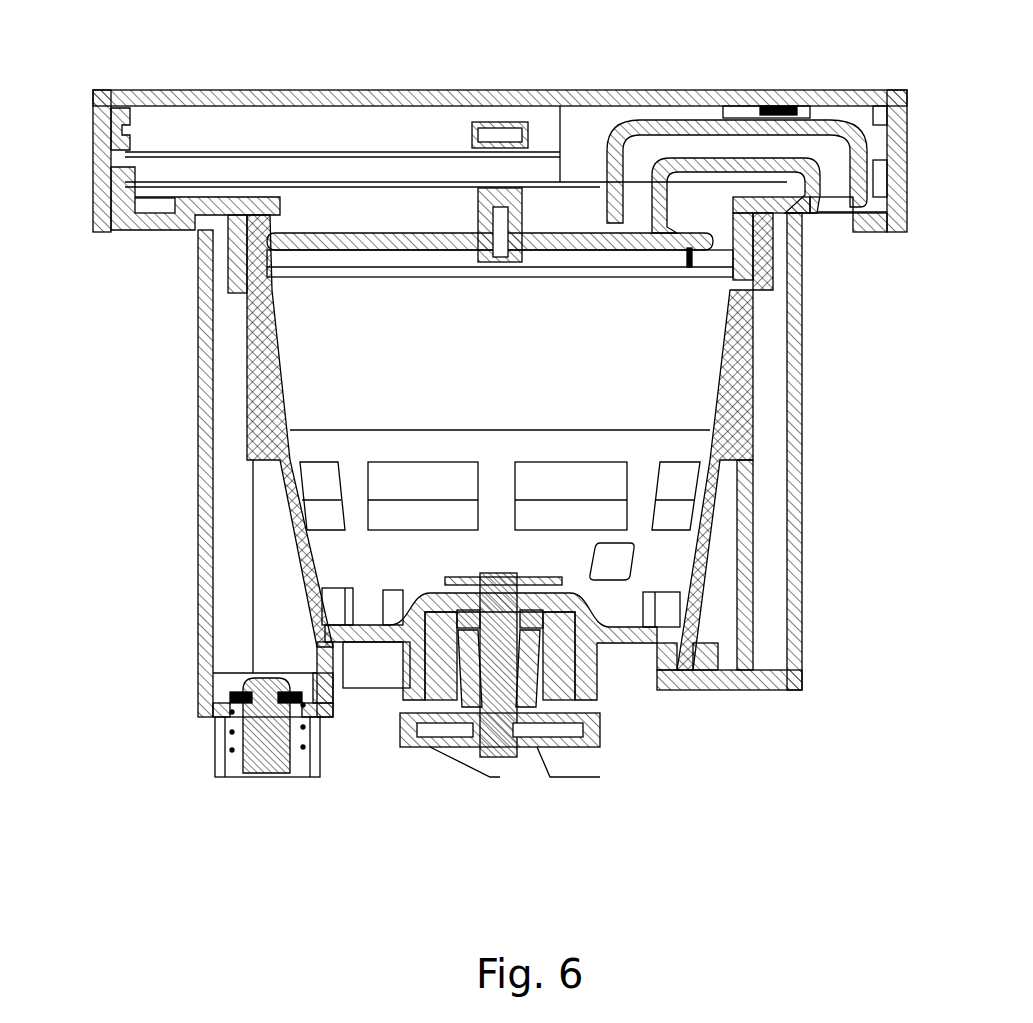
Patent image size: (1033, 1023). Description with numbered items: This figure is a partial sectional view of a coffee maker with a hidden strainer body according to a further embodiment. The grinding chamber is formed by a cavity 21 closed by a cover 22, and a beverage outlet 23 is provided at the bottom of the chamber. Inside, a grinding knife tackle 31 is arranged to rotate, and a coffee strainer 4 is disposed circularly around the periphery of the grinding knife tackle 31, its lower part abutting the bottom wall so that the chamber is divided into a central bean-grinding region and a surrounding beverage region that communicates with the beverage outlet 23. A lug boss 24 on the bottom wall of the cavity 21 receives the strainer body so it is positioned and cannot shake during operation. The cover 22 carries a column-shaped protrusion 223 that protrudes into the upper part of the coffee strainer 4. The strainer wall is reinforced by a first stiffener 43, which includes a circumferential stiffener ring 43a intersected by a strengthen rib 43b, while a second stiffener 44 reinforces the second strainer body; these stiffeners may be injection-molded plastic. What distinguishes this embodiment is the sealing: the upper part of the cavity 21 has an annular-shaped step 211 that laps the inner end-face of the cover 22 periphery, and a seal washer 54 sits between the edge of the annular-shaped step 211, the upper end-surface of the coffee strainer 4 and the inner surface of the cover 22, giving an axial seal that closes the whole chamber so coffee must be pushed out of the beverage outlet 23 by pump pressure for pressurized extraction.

The cover 22 is at (753, 88).
The seal washer 54 is at (223, 207).
The cavity 21 is at (813, 320).
The annular-shaped step 211 is at (163, 233).
The protrusion 223 is at (243, 290).
The coffee strainer 4 is at (258, 435).
The first stiffener 43 is at (609, 407).
The stiffener ring 43a is at (657, 567).
The strengthen rib 43b is at (643, 498).
The second stiffener 44 is at (753, 572).
The lug boss 24 is at (320, 657).
The beverage outlet 23 is at (240, 775).
The grinding knife tackle 31 is at (608, 572).